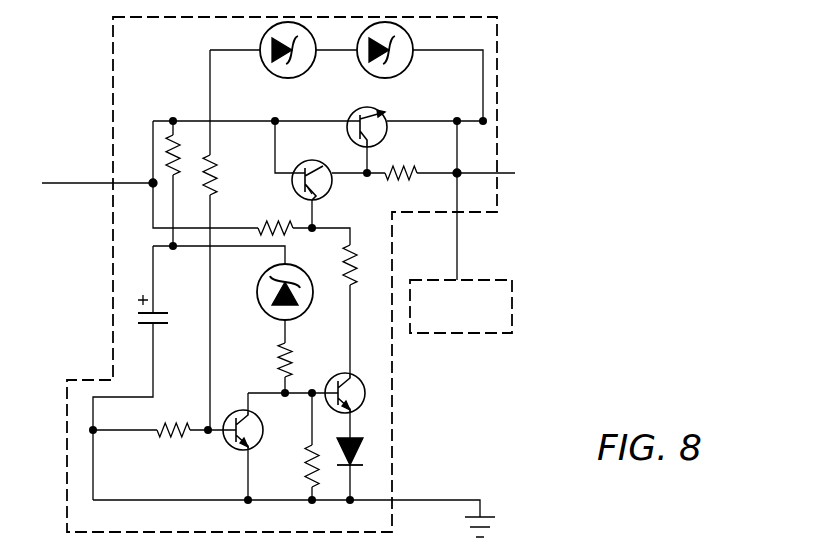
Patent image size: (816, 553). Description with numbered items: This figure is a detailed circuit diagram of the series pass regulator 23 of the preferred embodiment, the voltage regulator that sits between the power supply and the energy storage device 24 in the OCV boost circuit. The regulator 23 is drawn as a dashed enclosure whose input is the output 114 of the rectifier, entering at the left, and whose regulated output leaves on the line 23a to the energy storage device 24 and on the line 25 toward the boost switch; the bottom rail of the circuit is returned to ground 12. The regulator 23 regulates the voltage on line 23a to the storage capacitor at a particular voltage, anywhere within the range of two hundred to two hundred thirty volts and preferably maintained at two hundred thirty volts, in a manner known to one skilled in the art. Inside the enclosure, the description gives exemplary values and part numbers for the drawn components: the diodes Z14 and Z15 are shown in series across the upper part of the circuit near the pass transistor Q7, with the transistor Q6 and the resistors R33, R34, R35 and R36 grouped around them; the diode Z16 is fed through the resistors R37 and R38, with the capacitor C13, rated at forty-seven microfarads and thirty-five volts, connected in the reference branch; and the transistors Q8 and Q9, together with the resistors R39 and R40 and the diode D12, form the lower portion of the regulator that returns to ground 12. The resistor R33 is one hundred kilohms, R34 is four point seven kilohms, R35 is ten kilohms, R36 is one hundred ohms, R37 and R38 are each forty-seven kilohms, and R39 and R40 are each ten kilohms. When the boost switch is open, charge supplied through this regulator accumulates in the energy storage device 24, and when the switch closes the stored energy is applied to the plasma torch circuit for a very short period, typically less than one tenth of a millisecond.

The series pass regulator 23 is at (113, 335).
The energy storage device 24 is at (512, 315).
The line 23a is at (457, 248).
The output of the rectifier 114 is at (88, 183).
The line 25 is at (505, 170).
The ground 12 is at (493, 517).
The diode Z14 is at (270, 56).
The diode Z15 is at (402, 56).
The diode Z16 is at (268, 299).
The transistor Q6 is at (312, 167).
The transistor Q7 is at (352, 119).
The transistor Q8 is at (241, 414).
The transistor Q9 is at (353, 384).
The diode D12 is at (360, 435).
The capacitor C13 is at (167, 324).
The resistor R33 is at (185, 155).
The resistor R34 is at (222, 176).
The resistor R35 is at (274, 219).
The resistor R36 is at (400, 163).
The resistor R37 is at (362, 265).
The resistor R38 is at (297, 361).
The resistor R39 is at (173, 420).
The resistor R40 is at (301, 466).